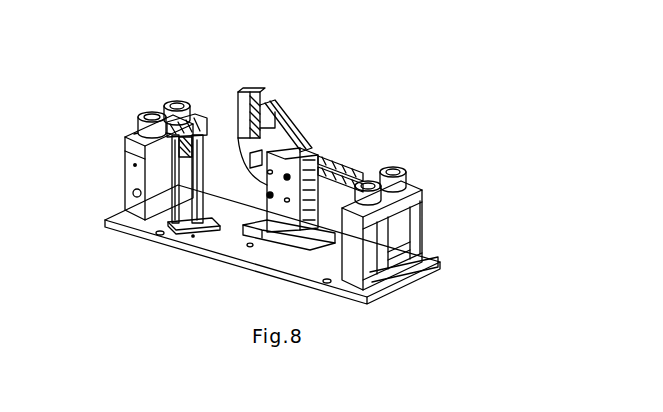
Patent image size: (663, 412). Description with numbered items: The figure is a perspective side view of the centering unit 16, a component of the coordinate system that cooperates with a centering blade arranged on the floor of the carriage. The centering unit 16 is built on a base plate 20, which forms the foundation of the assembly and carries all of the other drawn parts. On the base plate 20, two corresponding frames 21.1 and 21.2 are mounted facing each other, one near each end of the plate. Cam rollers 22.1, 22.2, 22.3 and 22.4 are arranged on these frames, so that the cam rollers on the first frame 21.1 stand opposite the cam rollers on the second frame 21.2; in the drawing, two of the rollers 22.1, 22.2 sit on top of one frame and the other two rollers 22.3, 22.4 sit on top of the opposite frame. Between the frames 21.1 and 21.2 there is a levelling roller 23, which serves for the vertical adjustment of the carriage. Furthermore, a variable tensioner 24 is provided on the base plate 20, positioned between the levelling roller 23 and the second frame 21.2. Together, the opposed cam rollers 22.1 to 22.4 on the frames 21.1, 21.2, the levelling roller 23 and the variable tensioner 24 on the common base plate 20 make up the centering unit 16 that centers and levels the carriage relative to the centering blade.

The centering unit 16 is at (328, 82).
The base plate 20 is at (207, 235).
The frame 21.1 is at (143, 165).
The frame 21.2 is at (357, 262).
The cam roller 22.1 is at (150, 117).
The cam roller 22.2 is at (173, 102).
The cam roller 22.3 is at (403, 175).
The cam roller 22.4 is at (383, 165).
The levelling roller 23 is at (207, 135).
The variable tensioner 24 is at (280, 218).